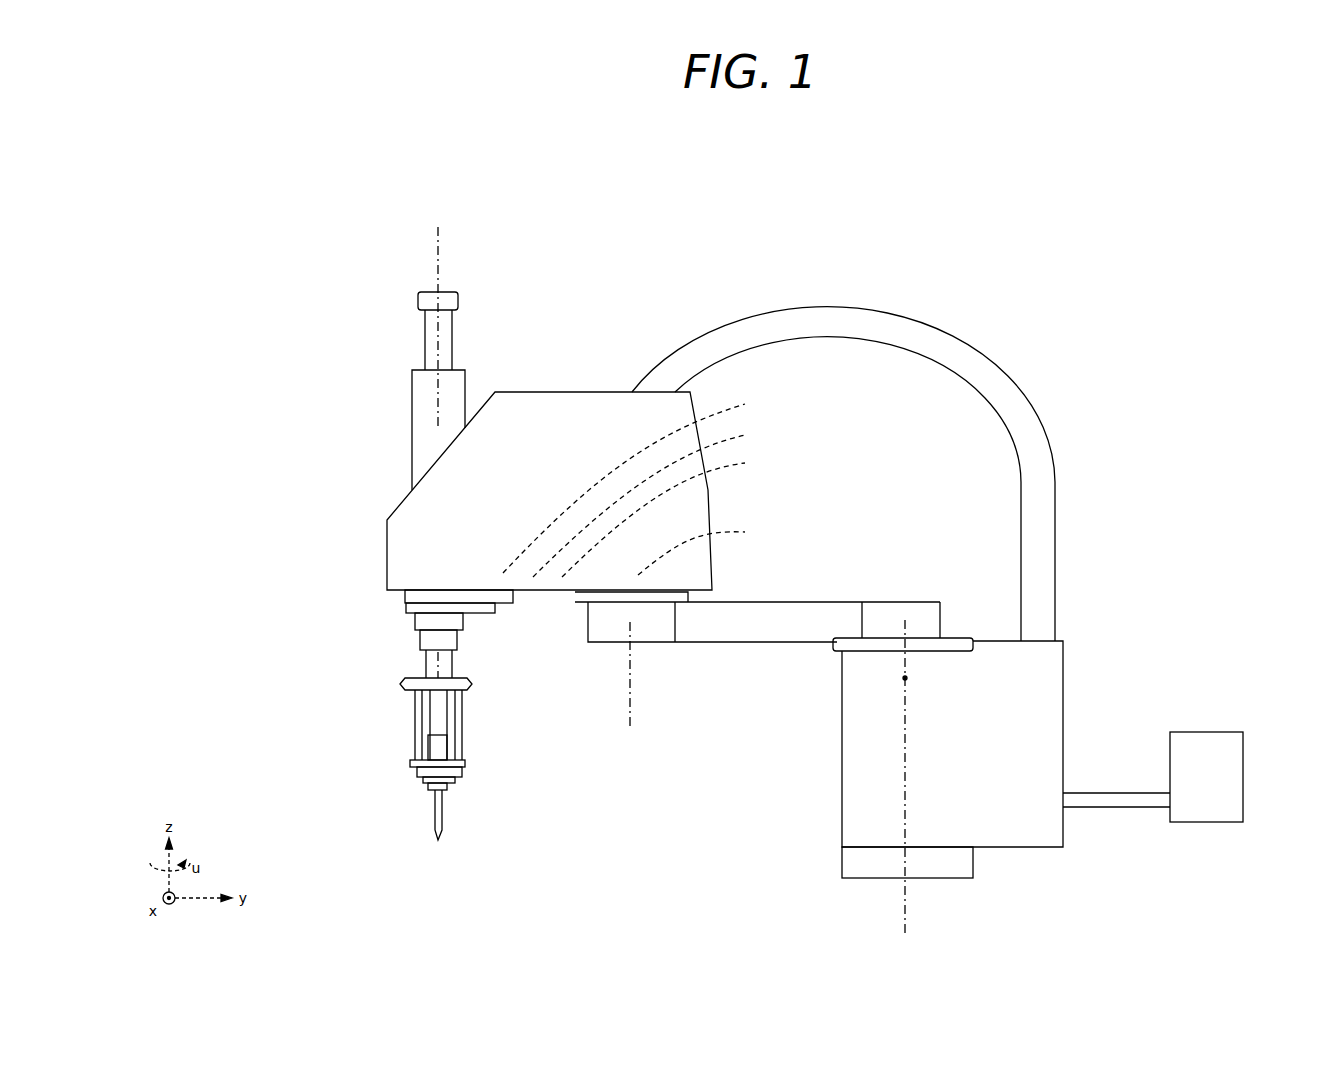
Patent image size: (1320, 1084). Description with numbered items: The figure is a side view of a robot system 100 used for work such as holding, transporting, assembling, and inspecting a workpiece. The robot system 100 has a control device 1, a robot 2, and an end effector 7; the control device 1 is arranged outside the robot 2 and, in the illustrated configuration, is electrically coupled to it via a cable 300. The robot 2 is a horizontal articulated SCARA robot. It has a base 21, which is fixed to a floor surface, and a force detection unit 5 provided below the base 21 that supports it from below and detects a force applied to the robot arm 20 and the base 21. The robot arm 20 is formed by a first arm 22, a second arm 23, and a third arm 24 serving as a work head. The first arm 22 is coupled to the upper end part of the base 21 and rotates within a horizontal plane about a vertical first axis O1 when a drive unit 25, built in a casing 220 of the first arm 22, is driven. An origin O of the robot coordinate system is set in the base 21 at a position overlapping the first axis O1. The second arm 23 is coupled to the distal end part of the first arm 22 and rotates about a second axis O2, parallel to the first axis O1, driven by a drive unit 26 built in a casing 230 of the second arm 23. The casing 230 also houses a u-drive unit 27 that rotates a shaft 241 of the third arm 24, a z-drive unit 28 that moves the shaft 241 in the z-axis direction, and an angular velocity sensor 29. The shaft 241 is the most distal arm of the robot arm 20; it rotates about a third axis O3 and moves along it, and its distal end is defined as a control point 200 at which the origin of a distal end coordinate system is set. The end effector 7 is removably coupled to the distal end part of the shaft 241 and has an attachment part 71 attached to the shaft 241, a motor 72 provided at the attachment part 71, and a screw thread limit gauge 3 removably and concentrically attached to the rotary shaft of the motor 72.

The robot system 100 is at (1003, 242).
The robot 2 is at (650, 272).
The control device 1 is at (1222, 717).
The cable 300 is at (1123, 790).
The robot arm 20 is at (784, 217).
The base 21 is at (1040, 672).
The force detection unit 5 is at (845, 860).
The first arm 22 is at (715, 617).
The casing 220 is at (823, 603).
The drive unit 25 is at (905, 605).
The second arm 23 is at (495, 462).
The casing 230 is at (541, 384).
The third arm 24 is at (425, 325).
The shaft 241 is at (425, 345).
The drive unit 26 is at (709, 548).
The u-drive unit 27 is at (671, 513).
The z-drive unit 28 is at (656, 498).
The angular velocity sensor 29 is at (641, 481).
The control point 200 is at (435, 673).
The end effector 7 is at (493, 689).
The attachment part 71 is at (486, 756).
The motor 72 is at (425, 755).
The screw thread limit gauge 3 is at (435, 808).
The origin O is at (903, 678).
The first axis O1 is at (900, 713).
The second axis O2 is at (632, 672).
The third axis O3 is at (445, 240).